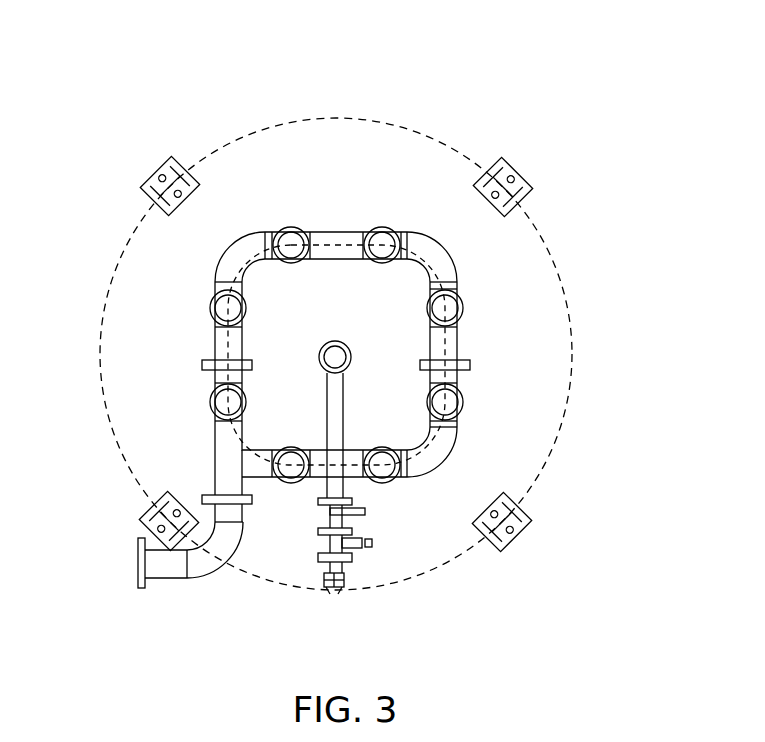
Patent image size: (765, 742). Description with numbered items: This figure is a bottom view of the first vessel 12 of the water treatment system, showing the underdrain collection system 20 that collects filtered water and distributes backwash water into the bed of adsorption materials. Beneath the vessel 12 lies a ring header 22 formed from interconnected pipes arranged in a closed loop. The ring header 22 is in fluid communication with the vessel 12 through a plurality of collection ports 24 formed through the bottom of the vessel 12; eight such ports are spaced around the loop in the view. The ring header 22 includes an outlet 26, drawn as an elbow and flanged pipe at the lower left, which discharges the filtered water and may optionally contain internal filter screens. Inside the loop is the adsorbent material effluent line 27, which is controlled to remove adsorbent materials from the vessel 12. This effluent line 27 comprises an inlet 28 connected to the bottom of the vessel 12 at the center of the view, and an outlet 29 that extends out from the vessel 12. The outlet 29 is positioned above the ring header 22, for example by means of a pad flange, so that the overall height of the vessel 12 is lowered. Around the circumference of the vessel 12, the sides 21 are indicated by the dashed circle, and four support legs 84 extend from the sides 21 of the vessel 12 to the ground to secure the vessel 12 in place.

The first vessel 12 is at (455, 134).
The underdrain collection system 20 is at (324, 413).
The sides 21 is at (574, 363).
The ring header 22 is at (432, 268).
The collection ports 24 is at (334, 232).
The outlet 26 is at (138, 562).
The adsorbent material effluent line 27 is at (350, 411).
The inlet 28 is at (337, 345).
The outlet 29 is at (338, 590).
The support legs 84 is at (157, 173).